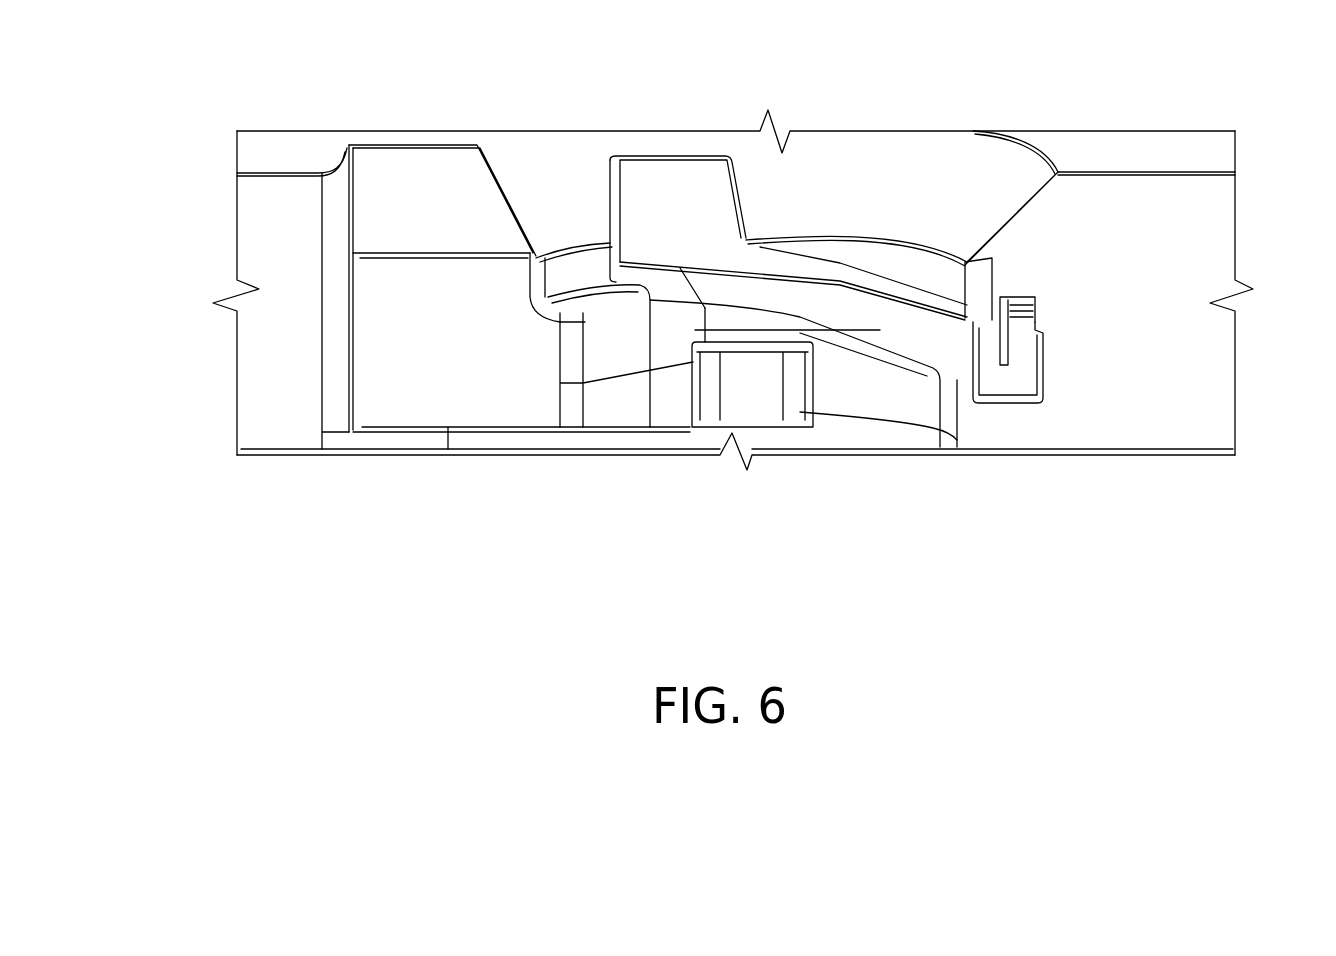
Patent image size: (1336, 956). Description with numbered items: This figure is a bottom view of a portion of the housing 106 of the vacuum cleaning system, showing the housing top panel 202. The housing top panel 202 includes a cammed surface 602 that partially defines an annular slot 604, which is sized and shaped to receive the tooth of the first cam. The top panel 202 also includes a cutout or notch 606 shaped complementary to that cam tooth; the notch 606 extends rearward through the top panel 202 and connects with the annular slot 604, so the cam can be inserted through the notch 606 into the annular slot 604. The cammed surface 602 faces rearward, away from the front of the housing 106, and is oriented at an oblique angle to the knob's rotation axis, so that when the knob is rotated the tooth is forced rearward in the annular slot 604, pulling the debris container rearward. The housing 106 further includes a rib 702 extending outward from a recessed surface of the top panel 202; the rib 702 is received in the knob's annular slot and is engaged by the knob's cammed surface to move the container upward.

The housing 106 is at (949, 116).
The housing top panel 202 is at (246, 190).
The cammed surface 602 is at (762, 248).
The annular slot 604 is at (865, 273).
The notch 606 is at (732, 228).
The rib 702 is at (708, 388).